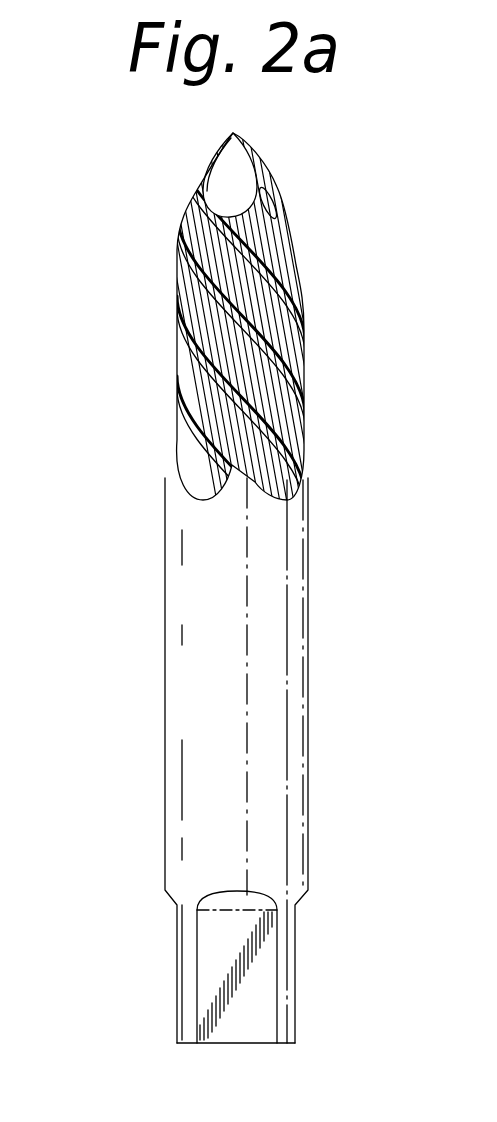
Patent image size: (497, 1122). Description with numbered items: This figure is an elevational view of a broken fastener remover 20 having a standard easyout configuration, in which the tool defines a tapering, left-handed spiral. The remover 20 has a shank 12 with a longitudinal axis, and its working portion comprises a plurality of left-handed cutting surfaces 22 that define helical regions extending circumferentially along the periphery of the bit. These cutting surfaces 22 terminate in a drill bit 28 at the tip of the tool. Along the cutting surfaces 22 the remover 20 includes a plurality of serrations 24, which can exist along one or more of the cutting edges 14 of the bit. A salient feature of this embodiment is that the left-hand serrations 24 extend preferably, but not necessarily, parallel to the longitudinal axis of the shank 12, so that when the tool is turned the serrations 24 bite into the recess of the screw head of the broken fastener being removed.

The broken fastener remover 20 is at (138, 697).
The shank 12 is at (308, 617).
The cutting edge 14 is at (255, 257).
The left-handed cutting surfaces 22 is at (282, 291).
The serrations 24 is at (185, 345).
The drill bit 28 is at (263, 160).